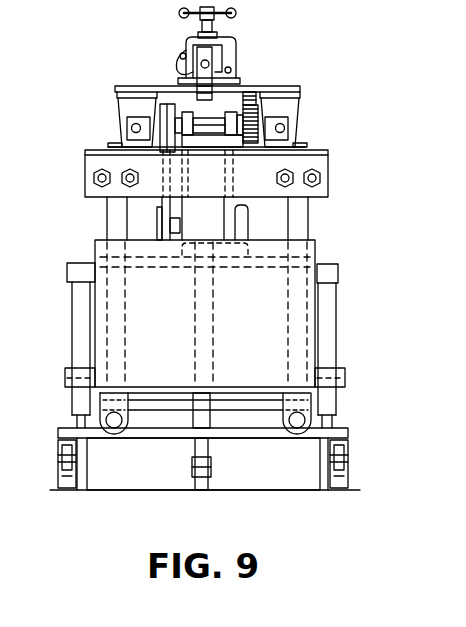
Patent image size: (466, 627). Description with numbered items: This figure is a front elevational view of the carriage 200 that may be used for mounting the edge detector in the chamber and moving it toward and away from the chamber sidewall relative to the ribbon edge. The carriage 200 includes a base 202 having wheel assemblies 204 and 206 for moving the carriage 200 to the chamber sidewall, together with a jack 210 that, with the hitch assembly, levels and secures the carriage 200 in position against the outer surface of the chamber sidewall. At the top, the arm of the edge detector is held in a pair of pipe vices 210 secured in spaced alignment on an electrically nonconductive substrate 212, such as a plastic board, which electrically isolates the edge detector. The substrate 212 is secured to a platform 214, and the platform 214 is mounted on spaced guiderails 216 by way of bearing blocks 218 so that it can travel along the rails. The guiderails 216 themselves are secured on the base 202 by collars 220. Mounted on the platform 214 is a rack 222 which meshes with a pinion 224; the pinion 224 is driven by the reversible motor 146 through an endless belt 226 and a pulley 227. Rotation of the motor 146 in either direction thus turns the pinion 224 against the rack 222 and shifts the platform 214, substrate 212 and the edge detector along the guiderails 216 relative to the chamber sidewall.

The reversible motor 146 is at (252, 223).
The carriage 200 is at (60, 325).
The base 202 is at (152, 450).
The wheel assembly 204 is at (206, 494).
The wheel assembly 206 is at (67, 495).
The jack 210 is at (230, 43).
The electrically nonconductive substrate 212 is at (248, 90).
The platform 214 is at (140, 86).
The guiderail 216 is at (131, 128).
The bearing block 218 is at (125, 108).
The collar 220 is at (128, 147).
The rack 222 is at (252, 88).
The pinion 224 is at (258, 103).
The endless belt 226 is at (160, 203).
The pulley 227 is at (163, 100).